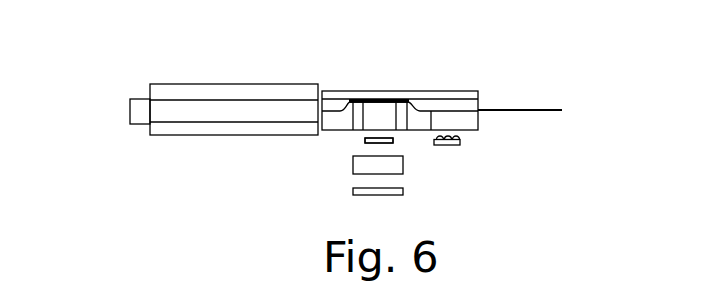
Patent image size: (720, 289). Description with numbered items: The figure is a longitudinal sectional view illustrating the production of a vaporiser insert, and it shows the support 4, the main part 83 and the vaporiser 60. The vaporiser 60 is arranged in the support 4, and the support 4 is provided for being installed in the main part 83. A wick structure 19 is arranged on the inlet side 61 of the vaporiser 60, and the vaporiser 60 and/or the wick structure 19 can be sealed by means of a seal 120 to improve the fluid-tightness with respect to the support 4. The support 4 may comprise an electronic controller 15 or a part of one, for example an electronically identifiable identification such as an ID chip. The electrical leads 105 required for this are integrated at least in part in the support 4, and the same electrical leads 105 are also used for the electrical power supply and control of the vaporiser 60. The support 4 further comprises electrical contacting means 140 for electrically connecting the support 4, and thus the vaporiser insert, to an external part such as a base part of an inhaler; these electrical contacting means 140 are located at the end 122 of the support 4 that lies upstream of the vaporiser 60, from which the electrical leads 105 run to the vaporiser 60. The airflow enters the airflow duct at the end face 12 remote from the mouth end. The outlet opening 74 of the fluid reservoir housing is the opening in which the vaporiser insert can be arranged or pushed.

The support 4 is at (409, 97).
The end face 12 is at (323, 117).
The electronic controller 15 is at (454, 152).
The wick structure 19 is at (346, 164).
The vaporiser 60 is at (379, 129).
The inlet side 61 is at (396, 141).
The outlet opening 74 is at (130, 112).
The main part 83 is at (160, 137).
The electrical leads 105 is at (527, 109).
The seal 120 is at (346, 192).
The end of the support 122 is at (524, 130).
The electrical contacting means 140 is at (569, 114).